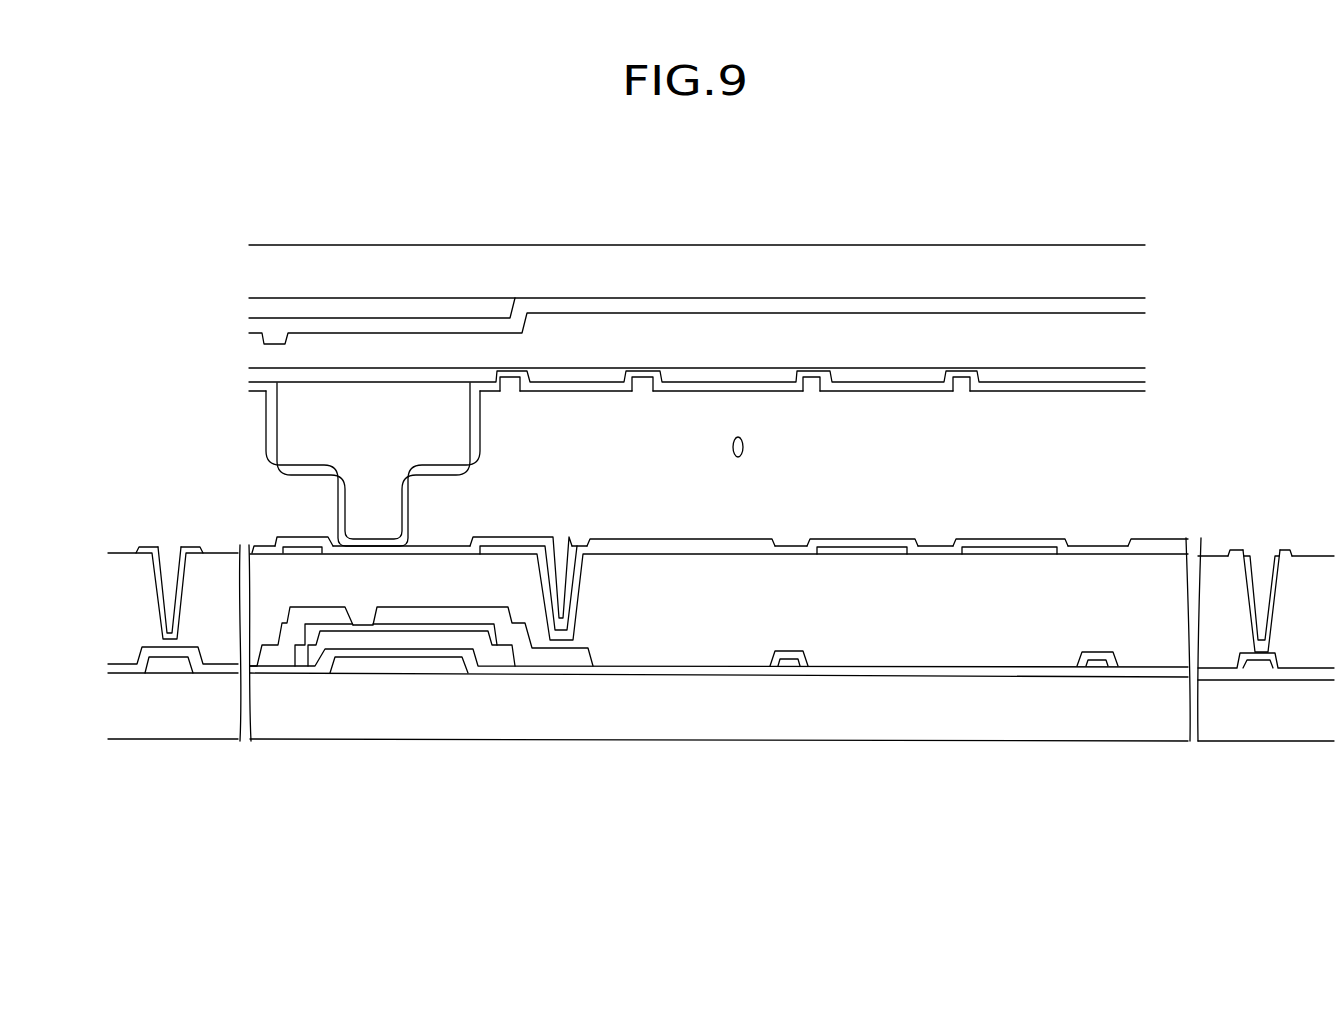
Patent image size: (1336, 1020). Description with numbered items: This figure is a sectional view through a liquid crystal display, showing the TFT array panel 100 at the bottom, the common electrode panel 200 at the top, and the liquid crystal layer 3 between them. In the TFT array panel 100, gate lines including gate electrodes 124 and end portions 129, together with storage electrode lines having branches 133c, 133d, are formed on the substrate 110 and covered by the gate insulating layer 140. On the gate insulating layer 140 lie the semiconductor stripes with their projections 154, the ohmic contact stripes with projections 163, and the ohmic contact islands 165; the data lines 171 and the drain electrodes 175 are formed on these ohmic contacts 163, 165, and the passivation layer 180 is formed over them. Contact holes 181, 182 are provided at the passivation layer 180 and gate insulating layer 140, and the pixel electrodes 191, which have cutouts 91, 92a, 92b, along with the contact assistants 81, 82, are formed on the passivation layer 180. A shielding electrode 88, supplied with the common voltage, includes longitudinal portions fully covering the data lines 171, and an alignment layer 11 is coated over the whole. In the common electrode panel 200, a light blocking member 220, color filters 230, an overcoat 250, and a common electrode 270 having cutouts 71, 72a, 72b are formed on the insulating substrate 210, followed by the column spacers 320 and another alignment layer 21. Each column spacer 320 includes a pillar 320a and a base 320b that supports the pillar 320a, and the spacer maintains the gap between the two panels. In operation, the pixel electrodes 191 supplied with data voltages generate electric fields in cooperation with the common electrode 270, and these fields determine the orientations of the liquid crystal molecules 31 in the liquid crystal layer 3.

The liquid crystal layer 3 is at (100, 393).
The TFT array panel 100 is at (100, 553).
The common electrode panel 200 is at (232, 245).
The insulating substrate 210 is at (503, 270).
The light blocking member 220 is at (296, 307).
The color filters 230 is at (657, 308).
The overcoat 250 is at (816, 343).
The common electrode 270 is at (377, 376).
The alignment layer 21 is at (580, 386).
The alignment layer 11 is at (507, 542).
The liquid crystal molecules 31 is at (745, 447).
The cutout 71 is at (640, 392).
The cutout 72a is at (512, 392).
The cutout 72b is at (960, 392).
The column spacers 320 is at (165, 407).
The pillar 320a is at (360, 519).
The base 320b is at (297, 420).
The substrate 110 is at (223, 707).
The gate electrodes 124 is at (382, 662).
The end portions 129 is at (170, 665).
The branch 133c is at (1097, 663).
The branch 133d is at (790, 664).
The gate insulating layer 140 is at (120, 677).
The projections 154 is at (440, 640).
The projections 163 is at (316, 634).
The ohmic contact islands 165 is at (500, 646).
The data lines 171 is at (268, 659).
The drain electrodes 175 is at (570, 658).
The passivation layer 180 is at (118, 590).
The contact hole 181 is at (157, 578).
The contact hole 182 is at (1270, 580).
The contact assistant 81 is at (191, 548).
The contact assistant 82 is at (1237, 550).
The shielding electrode 88 is at (300, 543).
The cutout 91 is at (912, 550).
The cutout 92a is at (776, 549).
The cutout 92b is at (1063, 549).
The pixel electrodes 191 is at (703, 548).